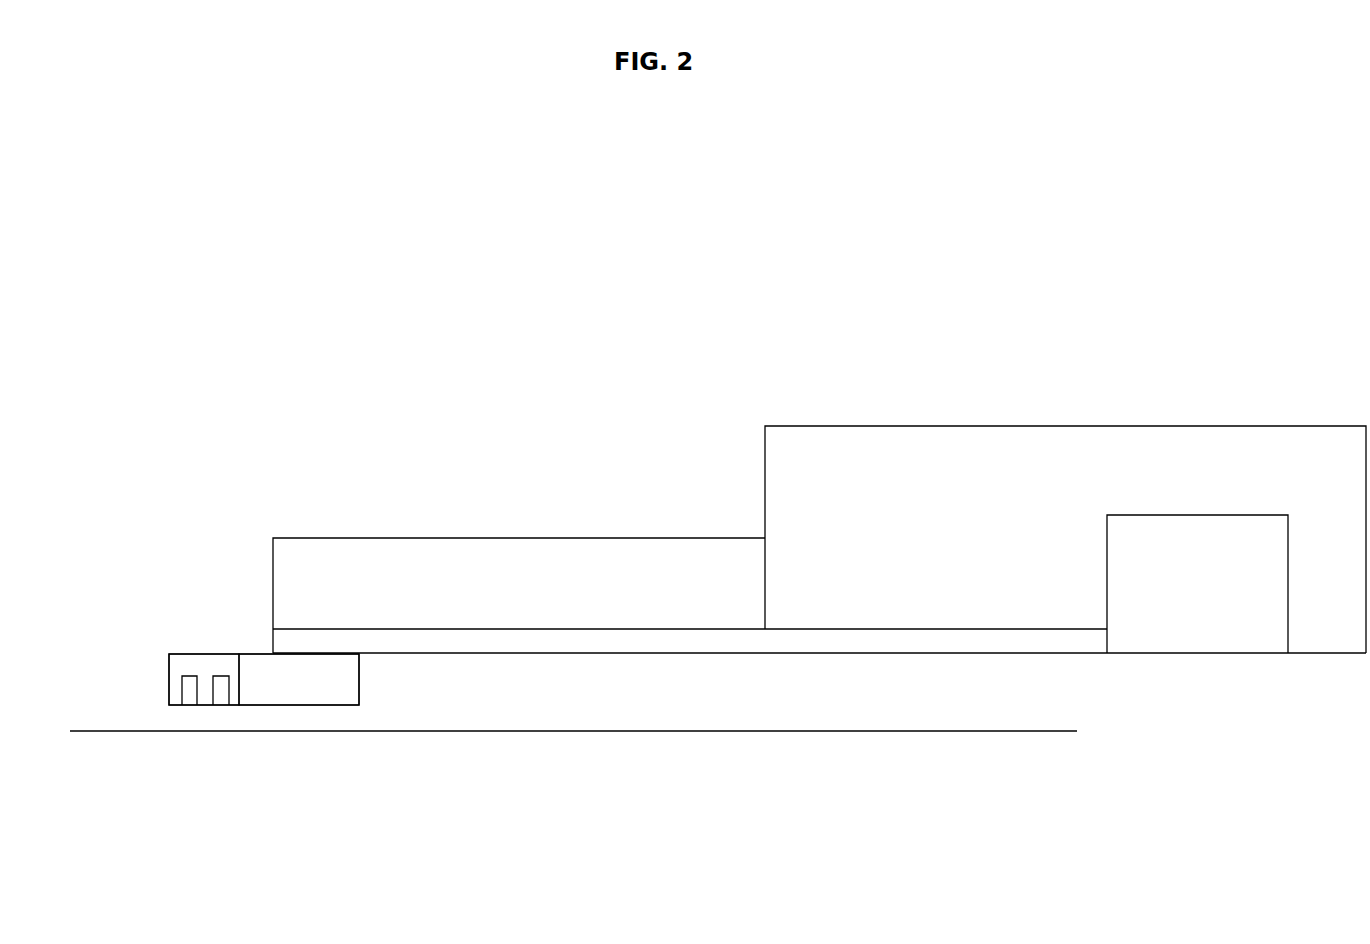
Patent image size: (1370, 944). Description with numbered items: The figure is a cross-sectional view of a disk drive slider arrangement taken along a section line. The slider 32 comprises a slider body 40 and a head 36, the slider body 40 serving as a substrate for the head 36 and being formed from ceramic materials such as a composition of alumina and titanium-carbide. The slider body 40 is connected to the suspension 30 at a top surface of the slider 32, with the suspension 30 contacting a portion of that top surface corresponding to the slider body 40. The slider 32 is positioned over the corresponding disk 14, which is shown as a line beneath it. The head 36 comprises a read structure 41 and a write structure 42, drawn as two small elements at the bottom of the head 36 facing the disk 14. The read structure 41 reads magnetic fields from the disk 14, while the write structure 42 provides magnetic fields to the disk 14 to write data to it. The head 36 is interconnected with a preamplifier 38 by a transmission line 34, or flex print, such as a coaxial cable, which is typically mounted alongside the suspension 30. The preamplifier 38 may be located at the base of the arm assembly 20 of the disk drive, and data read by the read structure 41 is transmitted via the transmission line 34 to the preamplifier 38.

The disk 14 is at (1048, 732).
The arm assembly 20 is at (922, 425).
The suspension 30 is at (476, 535).
The slider 32 is at (220, 613).
The transmission line 34 is at (713, 642).
The head 36 is at (190, 663).
The preamplifier 38 is at (1173, 573).
The slider body 40 is at (265, 667).
The read structure 41 is at (219, 695).
The write structure 42 is at (188, 695).